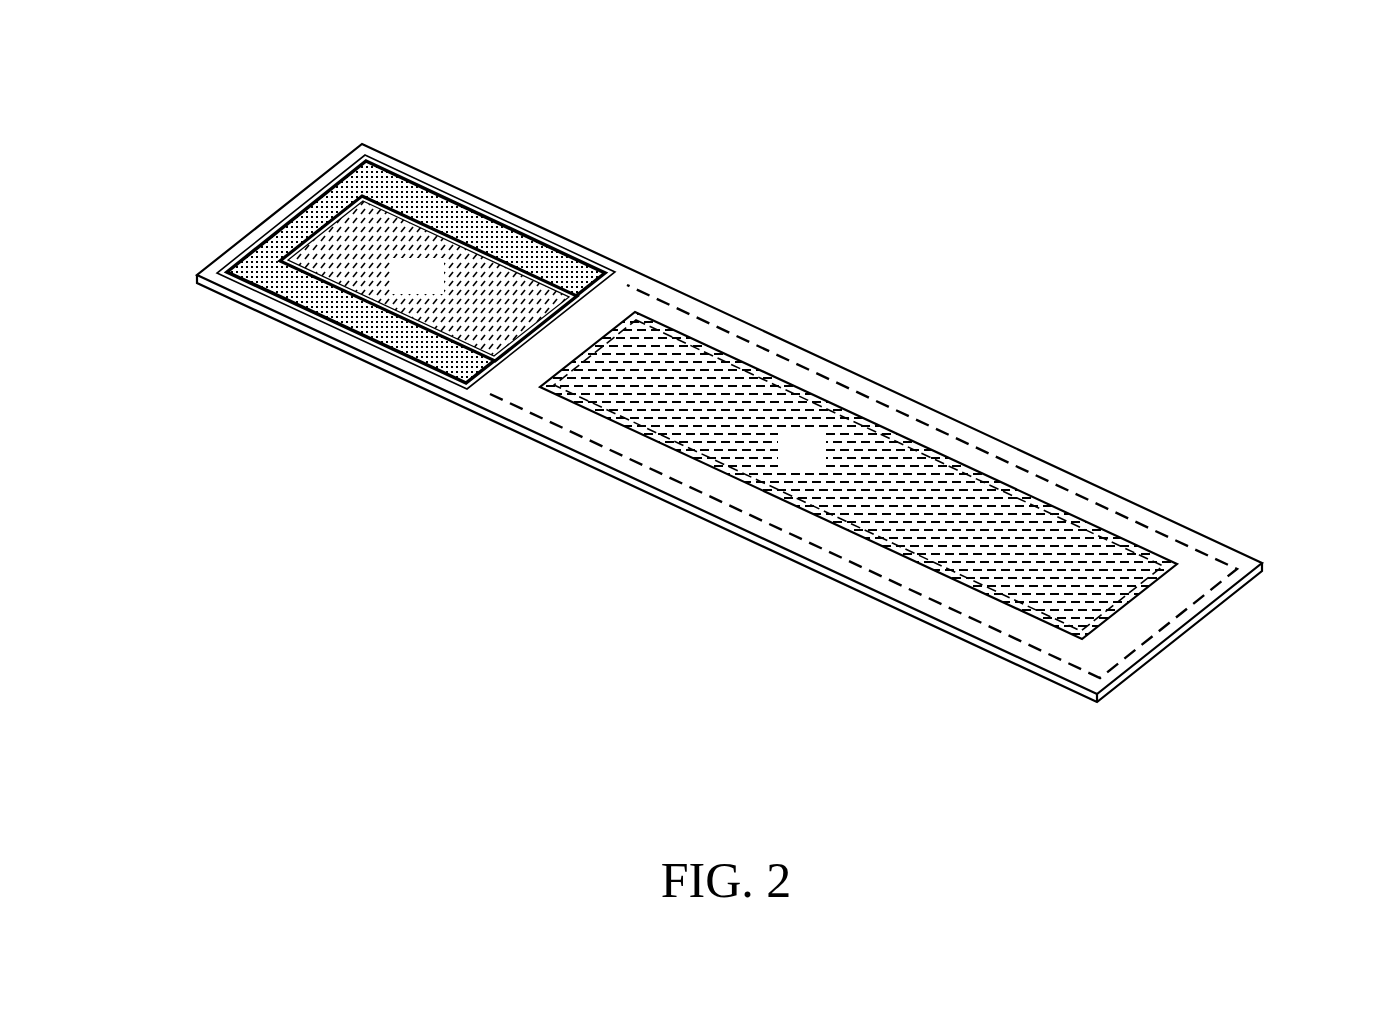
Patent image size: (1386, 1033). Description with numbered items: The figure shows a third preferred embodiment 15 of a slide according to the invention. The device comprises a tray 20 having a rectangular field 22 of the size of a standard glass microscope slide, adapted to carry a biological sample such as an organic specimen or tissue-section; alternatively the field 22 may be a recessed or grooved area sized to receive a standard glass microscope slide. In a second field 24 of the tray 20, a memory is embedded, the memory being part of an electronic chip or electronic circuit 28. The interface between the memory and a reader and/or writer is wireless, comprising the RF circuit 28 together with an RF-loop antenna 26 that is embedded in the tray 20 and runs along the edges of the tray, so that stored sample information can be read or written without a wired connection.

The third preferred embodiment 15 is at (483, 63).
The tray 20 is at (900, 394).
The rectangular field 22 is at (820, 466).
The second field 24 is at (436, 290).
The RF-loop antenna 26 is at (1208, 556).
The RF circuit 28 is at (465, 222).